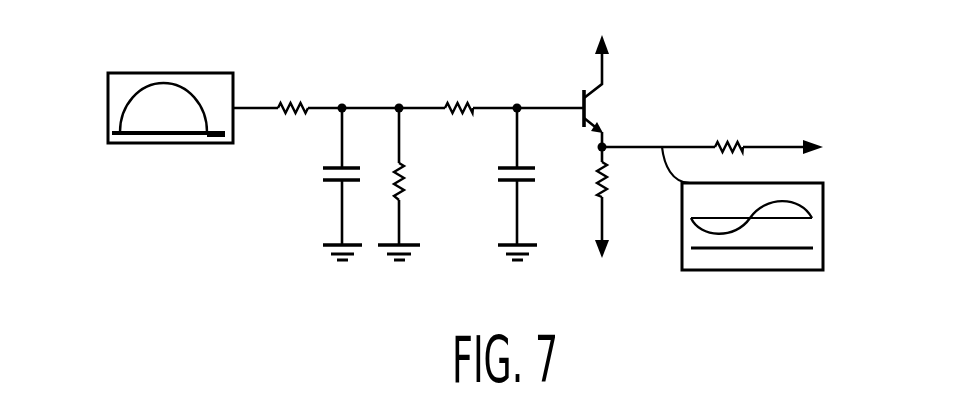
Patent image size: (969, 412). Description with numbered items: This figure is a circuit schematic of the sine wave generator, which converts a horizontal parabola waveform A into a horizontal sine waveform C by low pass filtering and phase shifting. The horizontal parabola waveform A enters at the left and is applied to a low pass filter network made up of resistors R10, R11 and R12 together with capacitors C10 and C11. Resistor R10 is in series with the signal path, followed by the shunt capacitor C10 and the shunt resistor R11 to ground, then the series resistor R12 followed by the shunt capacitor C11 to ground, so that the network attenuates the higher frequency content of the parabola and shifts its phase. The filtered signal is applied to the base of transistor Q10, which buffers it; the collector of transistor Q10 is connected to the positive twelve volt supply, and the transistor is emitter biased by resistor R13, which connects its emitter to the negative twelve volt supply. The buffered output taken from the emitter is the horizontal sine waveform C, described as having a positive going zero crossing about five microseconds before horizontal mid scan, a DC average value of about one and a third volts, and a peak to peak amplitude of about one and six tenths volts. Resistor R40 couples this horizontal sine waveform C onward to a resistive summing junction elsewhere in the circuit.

The horizontal parabola waveform A is at (108, 104).
The resistor R10 is at (293, 77).
The capacitor C10 is at (319, 184).
The resistor R11 is at (410, 184).
The resistor R12 is at (458, 77).
The capacitor C11 is at (497, 184).
The transistor Q10 is at (608, 75).
The resistor R13 is at (588, 220).
The resistor R40 is at (767, 117).
The horizontal sine waveform C is at (728, 270).